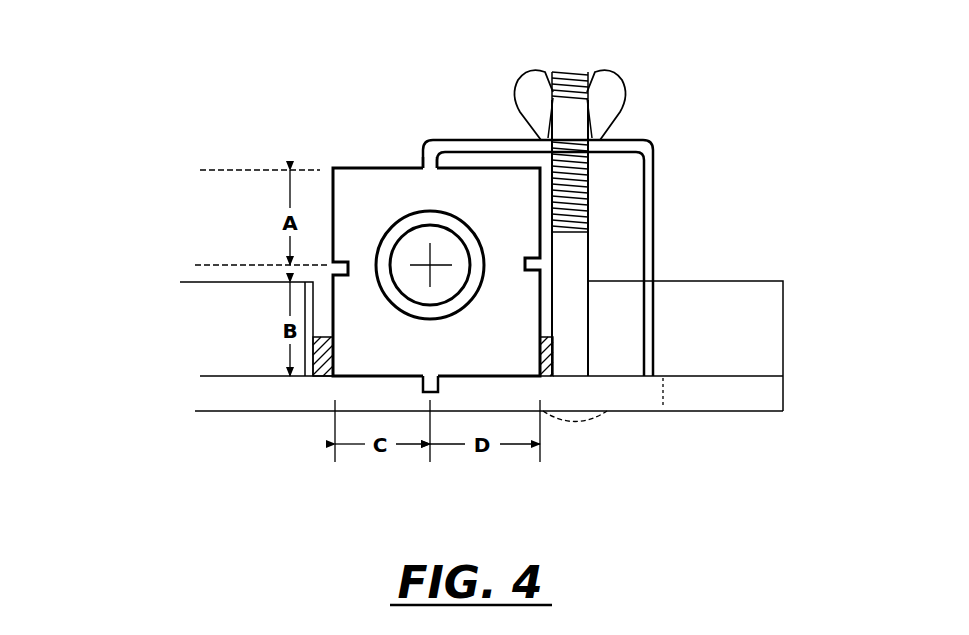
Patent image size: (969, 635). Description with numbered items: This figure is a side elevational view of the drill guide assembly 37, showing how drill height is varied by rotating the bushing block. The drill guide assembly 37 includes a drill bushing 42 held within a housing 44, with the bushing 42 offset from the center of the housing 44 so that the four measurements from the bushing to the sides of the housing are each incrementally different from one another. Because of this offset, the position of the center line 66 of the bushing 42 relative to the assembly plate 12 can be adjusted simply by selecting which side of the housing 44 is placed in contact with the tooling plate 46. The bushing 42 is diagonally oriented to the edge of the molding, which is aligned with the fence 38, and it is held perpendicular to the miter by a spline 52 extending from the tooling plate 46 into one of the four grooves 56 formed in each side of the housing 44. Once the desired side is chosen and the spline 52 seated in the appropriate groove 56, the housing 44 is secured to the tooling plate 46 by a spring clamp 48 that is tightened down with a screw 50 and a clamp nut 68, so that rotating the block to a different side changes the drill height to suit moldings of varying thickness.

The assembly plate 12 is at (321, 376).
The drill guide assembly 37 is at (216, 77).
The fence 38 is at (687, 318).
The drill bushing 42 is at (406, 214).
The housing 44 is at (488, 204).
The tooling plate 46 is at (210, 411).
The spring clamp 48 is at (656, 166).
The screw 50 is at (582, 70).
The spline 52 is at (440, 374).
The grooves 56 is at (524, 262).
The center line 66 is at (432, 267).
The clamp nut 68 is at (630, 74).